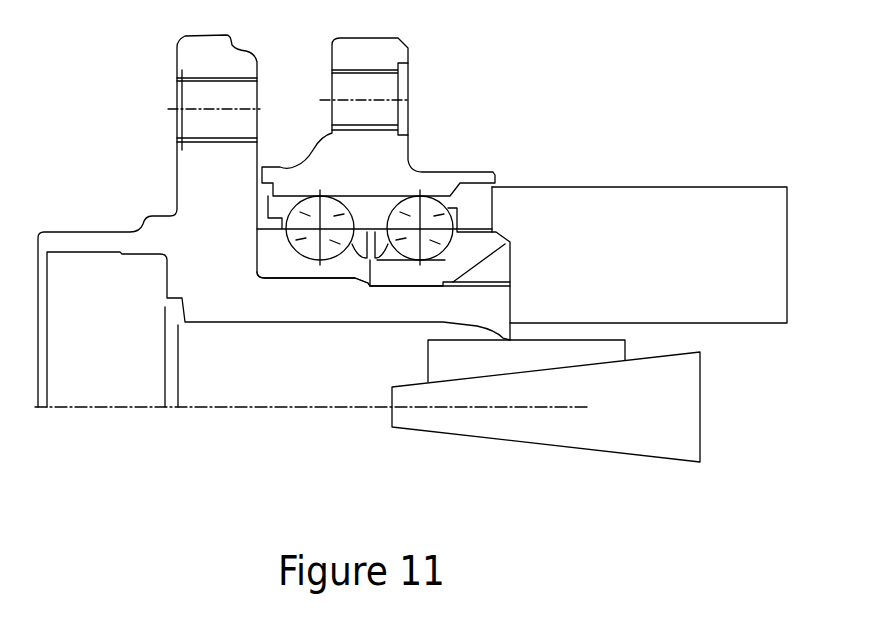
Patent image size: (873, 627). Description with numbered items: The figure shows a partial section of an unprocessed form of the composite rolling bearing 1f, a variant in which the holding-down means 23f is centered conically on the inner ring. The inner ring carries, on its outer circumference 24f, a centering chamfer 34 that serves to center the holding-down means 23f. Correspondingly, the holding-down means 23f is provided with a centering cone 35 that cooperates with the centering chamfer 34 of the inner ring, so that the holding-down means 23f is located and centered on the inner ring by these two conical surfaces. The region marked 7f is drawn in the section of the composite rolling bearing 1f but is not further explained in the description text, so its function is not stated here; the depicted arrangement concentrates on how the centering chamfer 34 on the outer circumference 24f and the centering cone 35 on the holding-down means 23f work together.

The composite rolling bearing 1f is at (572, 121).
The outer circumference 24f is at (466, 230).
The centering chamfer 34 is at (505, 234).
The holding-down means 23f is at (702, 208).
The hub 7f is at (413, 277).
The centering cone 35 is at (505, 244).